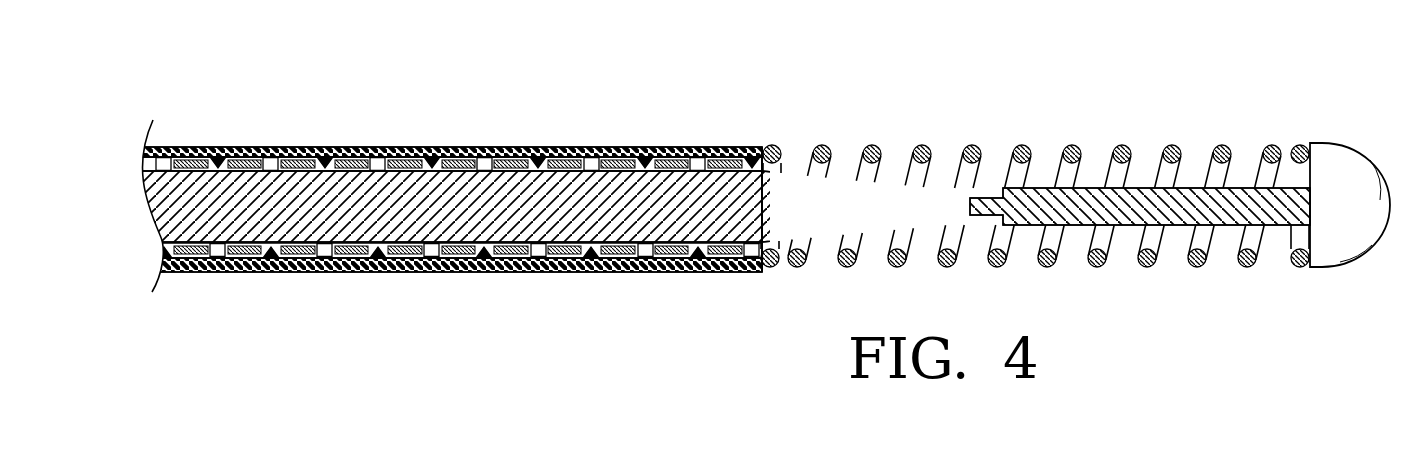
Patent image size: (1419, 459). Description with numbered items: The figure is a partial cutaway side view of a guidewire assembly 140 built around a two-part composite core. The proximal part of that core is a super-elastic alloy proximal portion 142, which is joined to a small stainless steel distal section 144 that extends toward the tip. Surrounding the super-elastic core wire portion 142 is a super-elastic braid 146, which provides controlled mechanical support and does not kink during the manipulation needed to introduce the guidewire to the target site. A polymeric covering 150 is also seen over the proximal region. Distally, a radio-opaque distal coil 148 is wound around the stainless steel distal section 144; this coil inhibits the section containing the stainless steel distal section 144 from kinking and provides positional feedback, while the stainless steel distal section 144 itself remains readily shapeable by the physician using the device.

The guidewire assembly 140 is at (537, 291).
The super-elastic alloy proximal portion 142 is at (596, 190).
The stainless steel distal section 144 is at (1090, 186).
The super-elastic braid 146 is at (683, 250).
The radio-opaque distal coil 148 is at (1223, 148).
The polymeric covering 150 is at (375, 147).